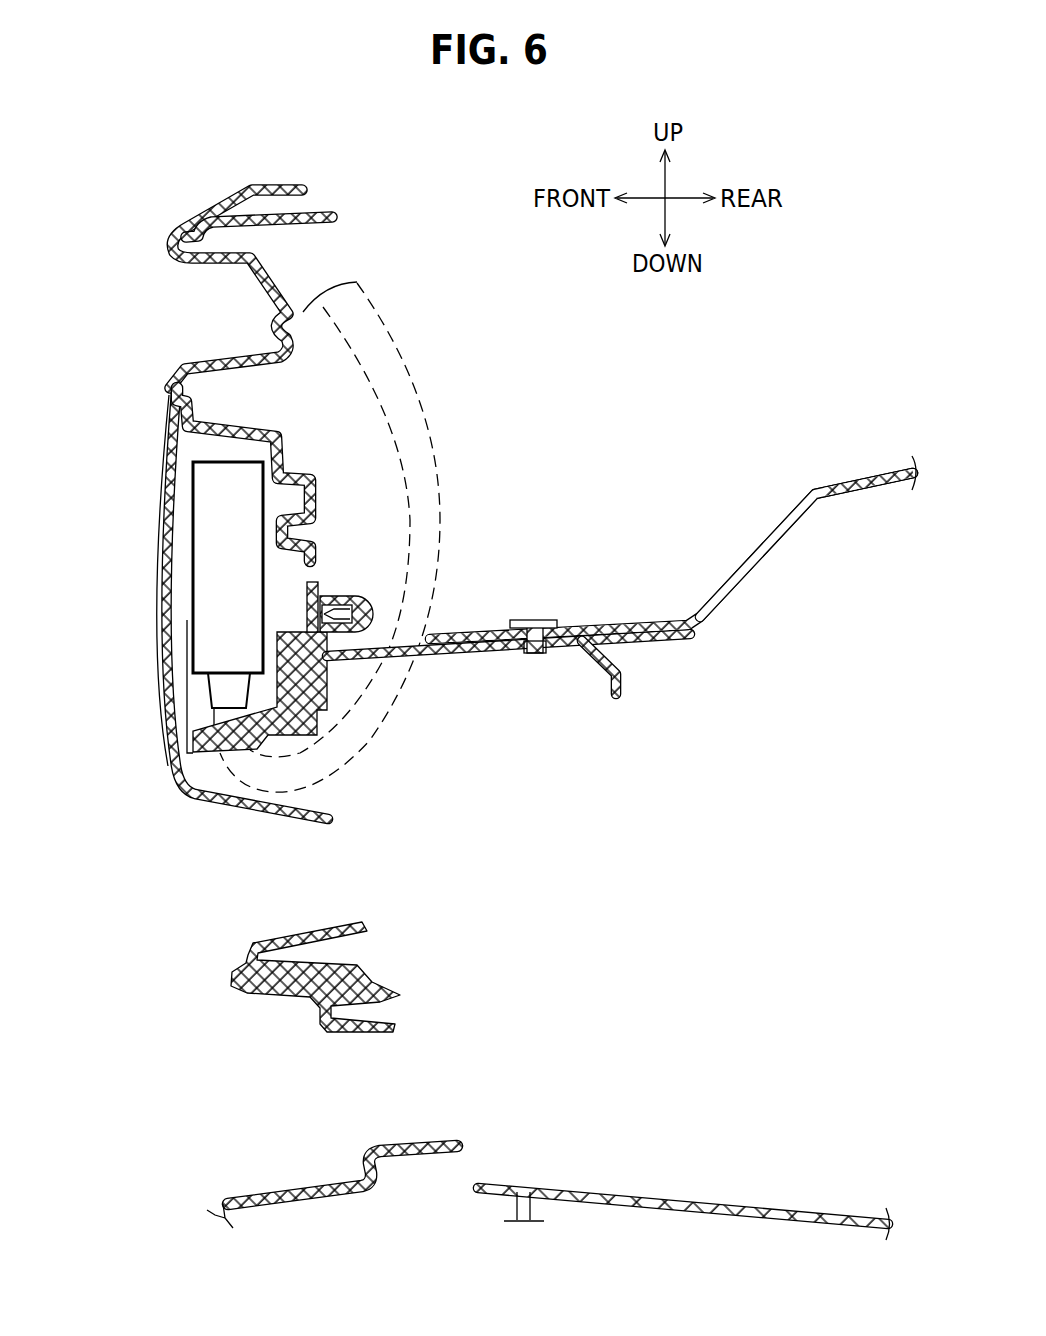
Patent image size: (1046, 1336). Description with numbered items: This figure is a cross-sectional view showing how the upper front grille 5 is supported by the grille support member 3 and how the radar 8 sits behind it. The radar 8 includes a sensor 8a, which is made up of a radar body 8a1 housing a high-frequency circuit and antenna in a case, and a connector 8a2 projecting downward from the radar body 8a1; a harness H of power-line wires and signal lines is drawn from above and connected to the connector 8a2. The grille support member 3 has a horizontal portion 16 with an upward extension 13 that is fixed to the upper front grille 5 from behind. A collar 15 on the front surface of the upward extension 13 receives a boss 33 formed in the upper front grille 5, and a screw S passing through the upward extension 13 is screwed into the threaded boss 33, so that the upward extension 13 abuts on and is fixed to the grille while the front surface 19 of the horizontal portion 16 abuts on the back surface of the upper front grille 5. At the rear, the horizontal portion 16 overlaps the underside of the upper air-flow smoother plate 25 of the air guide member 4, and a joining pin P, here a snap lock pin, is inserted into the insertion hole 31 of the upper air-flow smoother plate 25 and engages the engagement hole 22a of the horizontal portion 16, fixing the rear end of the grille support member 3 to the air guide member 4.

The upper front grille 5 is at (235, 358).
The radar 8 is at (166, 603).
The sensor 8a is at (242, 603).
The radar body 8a1 is at (222, 498).
The connector 8a2 is at (222, 692).
The harness H is at (443, 515).
The front surface 19 is at (302, 697).
The boss 33 is at (318, 590).
The collar 15 is at (347, 592).
The upward extension 13 is at (390, 650).
The grille support member 3 is at (671, 625).
The horizontal portion 16 is at (480, 648).
The air guide member 4 is at (808, 541).
The upper air-flow smoother plate 25 is at (718, 601).
The joining pin P is at (527, 620).
The insertion hole 31 is at (543, 621).
The engagement hole 22a is at (540, 655).
The screw S is at (365, 617).